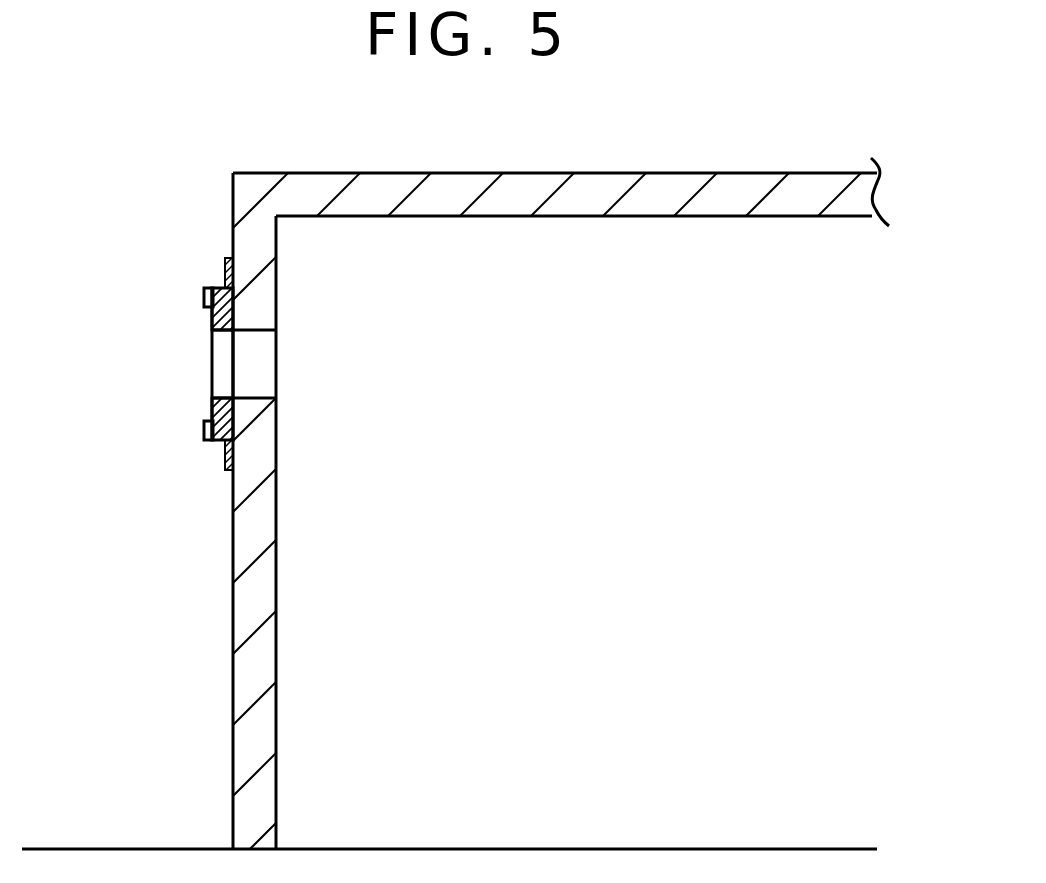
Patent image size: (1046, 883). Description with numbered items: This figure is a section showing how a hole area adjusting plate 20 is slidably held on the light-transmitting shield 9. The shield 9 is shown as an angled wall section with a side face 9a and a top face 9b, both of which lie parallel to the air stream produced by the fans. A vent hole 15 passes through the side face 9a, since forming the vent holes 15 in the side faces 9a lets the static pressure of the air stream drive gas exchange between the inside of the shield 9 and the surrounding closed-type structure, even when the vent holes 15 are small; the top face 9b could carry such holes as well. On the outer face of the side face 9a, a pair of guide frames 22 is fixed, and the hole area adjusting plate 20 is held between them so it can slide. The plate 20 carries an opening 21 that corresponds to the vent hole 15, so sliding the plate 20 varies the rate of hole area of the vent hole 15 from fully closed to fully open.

The light-transmitting shield 9 is at (550, 461).
The side face 9a is at (260, 592).
The top face 9b is at (578, 198).
The vent hole 15 is at (263, 358).
The hole area adjusting plate 20 is at (212, 323).
The opening 21 is at (220, 372).
The guide frame 22 is at (207, 287).